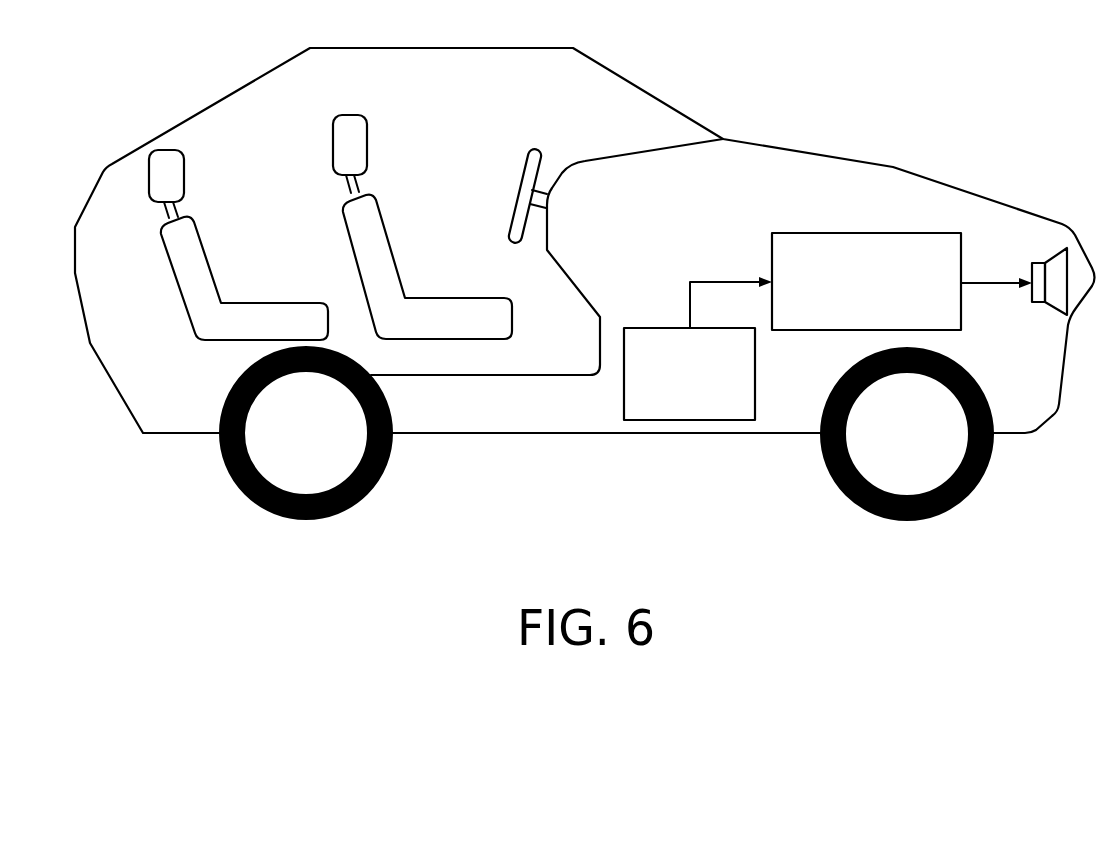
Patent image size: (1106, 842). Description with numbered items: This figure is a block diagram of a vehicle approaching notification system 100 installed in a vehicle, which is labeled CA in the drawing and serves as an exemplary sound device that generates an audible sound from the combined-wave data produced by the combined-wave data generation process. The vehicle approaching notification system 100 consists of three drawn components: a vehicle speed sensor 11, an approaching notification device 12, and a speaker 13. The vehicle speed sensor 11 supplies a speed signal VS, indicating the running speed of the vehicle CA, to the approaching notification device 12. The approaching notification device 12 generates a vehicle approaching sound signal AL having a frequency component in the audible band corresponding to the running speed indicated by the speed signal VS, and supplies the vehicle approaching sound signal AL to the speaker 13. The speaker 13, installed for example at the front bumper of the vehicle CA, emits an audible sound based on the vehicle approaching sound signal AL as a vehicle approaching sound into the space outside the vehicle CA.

The vehicle approaching notification system 100 is at (845, 307).
The vehicle speed sensor 11 is at (755, 383).
The approaching notification device 12 is at (862, 233).
The speaker 13 is at (1032, 302).
The vehicle CA is at (787, 150).
The speed signal VS is at (712, 304).
The vehicle approaching sound signal AL is at (996, 272).